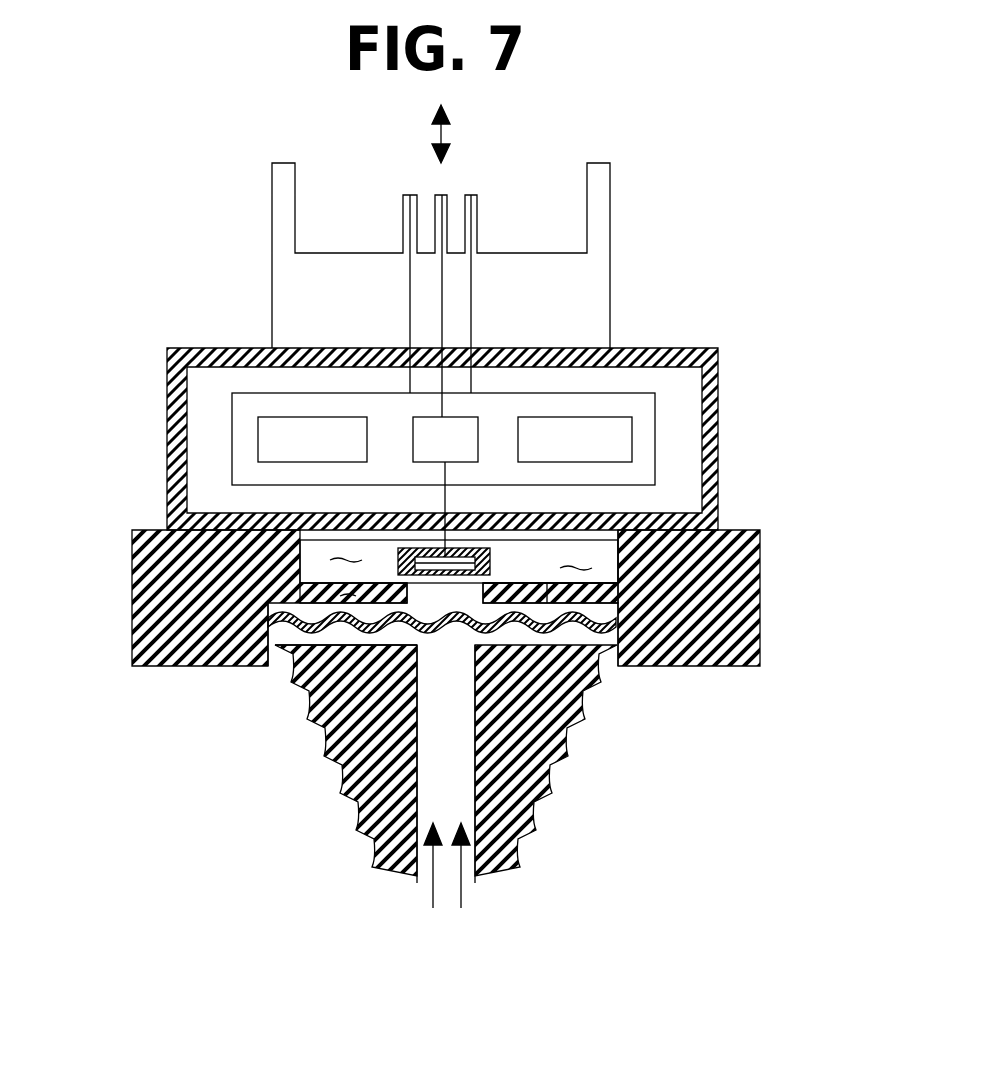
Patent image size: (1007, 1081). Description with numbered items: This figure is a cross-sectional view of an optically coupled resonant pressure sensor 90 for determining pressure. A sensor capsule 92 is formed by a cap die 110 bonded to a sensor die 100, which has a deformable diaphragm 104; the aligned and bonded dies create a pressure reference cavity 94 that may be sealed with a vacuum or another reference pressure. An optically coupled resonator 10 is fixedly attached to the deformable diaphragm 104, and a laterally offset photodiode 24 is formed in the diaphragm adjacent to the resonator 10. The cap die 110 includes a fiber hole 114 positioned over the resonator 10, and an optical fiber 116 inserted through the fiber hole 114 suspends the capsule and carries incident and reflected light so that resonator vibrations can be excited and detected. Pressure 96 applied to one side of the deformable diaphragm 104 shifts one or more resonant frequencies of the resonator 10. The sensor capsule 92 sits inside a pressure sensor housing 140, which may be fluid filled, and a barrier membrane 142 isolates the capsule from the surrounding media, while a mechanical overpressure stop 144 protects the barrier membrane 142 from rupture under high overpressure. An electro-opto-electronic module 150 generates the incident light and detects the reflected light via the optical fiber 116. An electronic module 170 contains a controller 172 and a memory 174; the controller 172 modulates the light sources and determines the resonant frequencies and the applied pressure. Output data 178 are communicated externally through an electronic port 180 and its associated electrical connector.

The optically coupled resonant pressure sensor 90 is at (165, 212).
The output data 178 is at (441, 133).
The electronic port 180 is at (610, 228).
The electronic module 170 is at (510, 390).
The electro-opto-electronic module 150 is at (417, 413).
The controller 172 is at (283, 417).
The memory 174 is at (607, 413).
The optical fiber 116 is at (455, 548).
The fiber hole 114 is at (460, 557).
The sensor capsule 92 is at (618, 557).
The pressure reference cavity 94 is at (618, 595).
The cap die 110 is at (300, 555).
The sensor die 100 is at (300, 592).
The pressure sensor housing 140 is at (760, 643).
The barrier membrane 142 is at (620, 668).
The mechanical overpressure stop 144 is at (547, 603).
The optically coupled resonator 10 is at (297, 658).
The photodiode 24 is at (443, 557).
The deformable diaphragm 104 is at (455, 563).
The pressure 96 is at (462, 892).